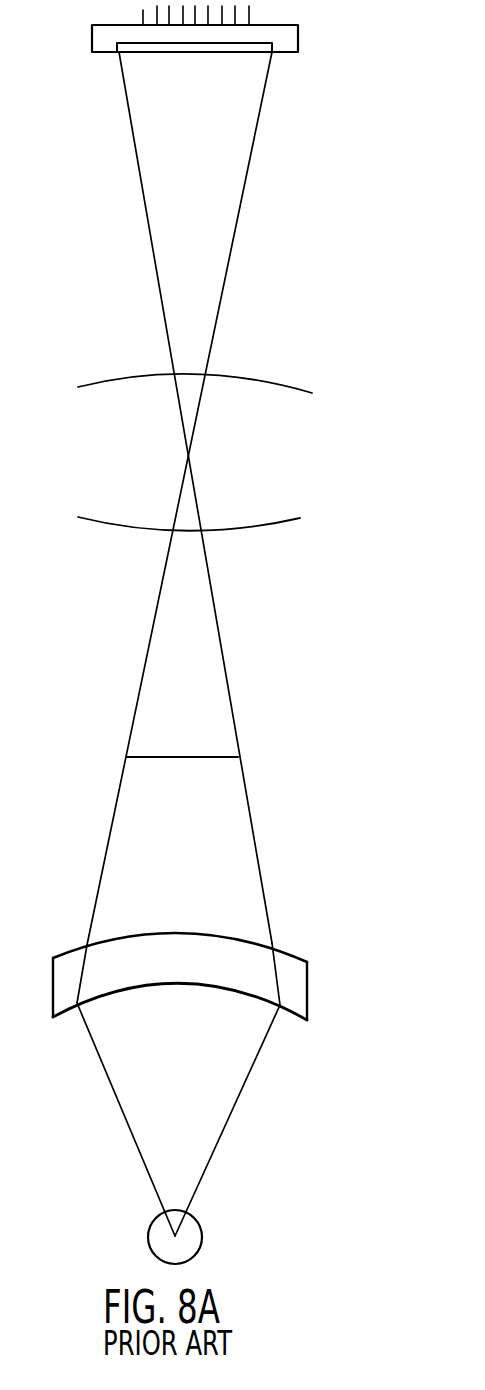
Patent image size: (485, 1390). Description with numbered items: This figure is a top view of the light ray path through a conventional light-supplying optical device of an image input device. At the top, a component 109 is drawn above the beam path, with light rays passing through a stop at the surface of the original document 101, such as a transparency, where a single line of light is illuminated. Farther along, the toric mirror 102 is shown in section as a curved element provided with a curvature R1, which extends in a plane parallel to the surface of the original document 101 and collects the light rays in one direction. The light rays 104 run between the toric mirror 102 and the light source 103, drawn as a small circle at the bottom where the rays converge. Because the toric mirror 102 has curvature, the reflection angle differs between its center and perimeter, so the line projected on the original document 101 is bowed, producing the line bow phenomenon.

The light source (LED array) 109 is at (298, 32).
The original document 101 is at (238, 757).
The toric mirror 102 is at (298, 985).
The curvature R1 is at (288, 1018).
The light rays 104 is at (237, 1108).
The light source 103 is at (188, 1225).